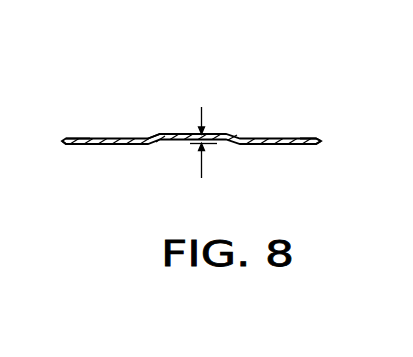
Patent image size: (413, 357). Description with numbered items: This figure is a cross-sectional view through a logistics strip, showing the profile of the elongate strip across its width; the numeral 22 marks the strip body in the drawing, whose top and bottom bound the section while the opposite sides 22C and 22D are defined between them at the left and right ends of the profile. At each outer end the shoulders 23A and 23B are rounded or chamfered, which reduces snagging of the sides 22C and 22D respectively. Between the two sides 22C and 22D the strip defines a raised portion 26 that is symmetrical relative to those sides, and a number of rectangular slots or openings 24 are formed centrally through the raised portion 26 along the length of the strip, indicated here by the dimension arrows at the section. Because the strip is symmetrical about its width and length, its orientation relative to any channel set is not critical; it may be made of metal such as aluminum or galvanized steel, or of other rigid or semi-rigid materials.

The strip / leaf spring element 22 is at (132, 99).
The shoulder 23A is at (65, 137).
The shoulder 23B is at (321, 141).
The side 22C is at (63, 146).
The side 22D is at (327, 146).
The slot or opening 24 is at (189, 144).
The raised portion 26 is at (163, 135).